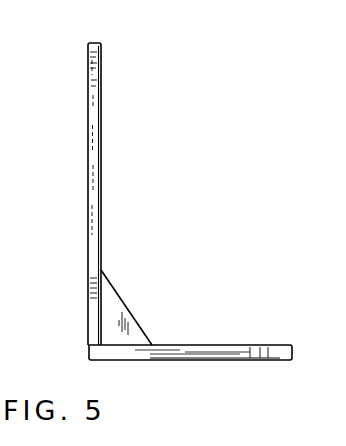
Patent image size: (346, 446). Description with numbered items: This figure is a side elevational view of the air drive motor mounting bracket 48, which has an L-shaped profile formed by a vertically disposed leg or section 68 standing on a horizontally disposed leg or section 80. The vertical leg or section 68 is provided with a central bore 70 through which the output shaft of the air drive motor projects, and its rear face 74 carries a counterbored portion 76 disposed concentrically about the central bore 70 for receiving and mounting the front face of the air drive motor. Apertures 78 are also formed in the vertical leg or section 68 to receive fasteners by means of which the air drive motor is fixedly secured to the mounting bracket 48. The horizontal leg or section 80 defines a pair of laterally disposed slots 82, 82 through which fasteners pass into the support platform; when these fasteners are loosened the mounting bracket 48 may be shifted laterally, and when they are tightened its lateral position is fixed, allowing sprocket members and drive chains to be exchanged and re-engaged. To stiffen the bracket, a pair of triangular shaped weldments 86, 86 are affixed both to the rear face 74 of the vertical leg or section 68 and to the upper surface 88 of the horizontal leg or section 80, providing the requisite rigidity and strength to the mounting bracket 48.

The mounting bracket 48 is at (88, 63).
The central bore 70 is at (101, 167).
The apertures 78 is at (103, 113).
The counterbored portion 76 is at (88, 201).
The vertically disposed leg or section 68 is at (90, 238).
The rear face 74 is at (101, 243).
The horizontally disposed leg or section 80 is at (222, 345).
The upper surface 88 is at (195, 345).
The laterally disposed slots 82 is at (258, 345).
The triangular shaped weldments 86 is at (115, 318).